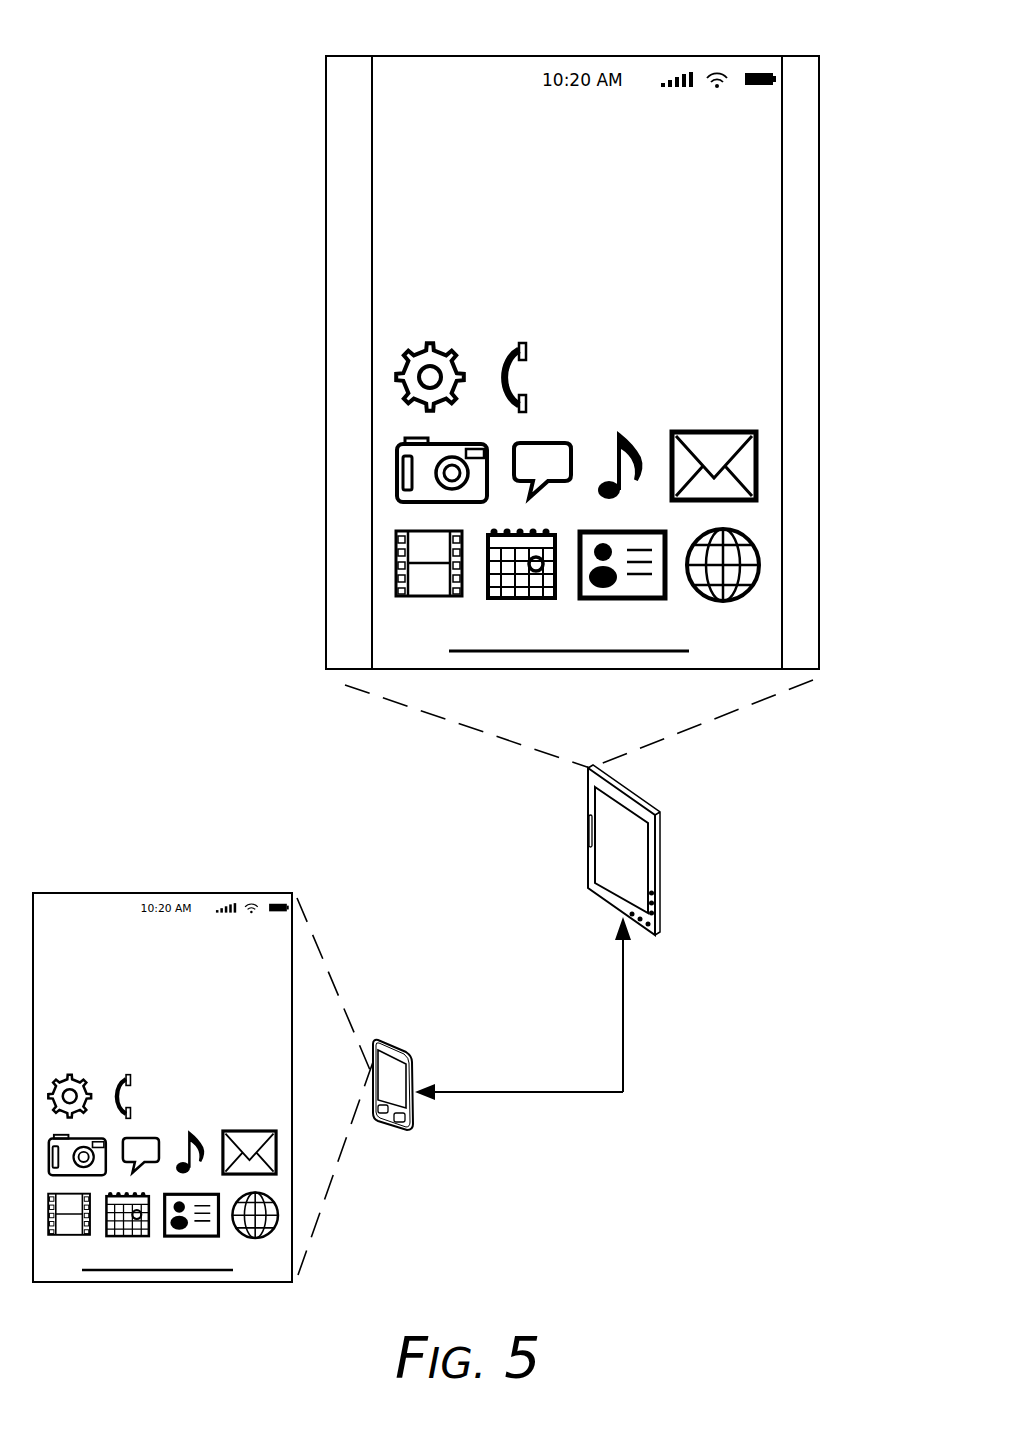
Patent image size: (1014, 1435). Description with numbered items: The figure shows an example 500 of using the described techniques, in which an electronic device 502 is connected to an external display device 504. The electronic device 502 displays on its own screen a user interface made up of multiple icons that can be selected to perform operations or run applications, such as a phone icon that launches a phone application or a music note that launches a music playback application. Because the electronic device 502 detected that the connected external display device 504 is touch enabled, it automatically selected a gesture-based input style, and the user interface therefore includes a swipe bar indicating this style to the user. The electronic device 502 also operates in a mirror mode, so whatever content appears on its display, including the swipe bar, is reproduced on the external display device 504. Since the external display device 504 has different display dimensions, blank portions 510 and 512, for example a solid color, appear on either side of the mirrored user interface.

The example 500 is at (153, 72).
The electronic device 502 is at (412, 1130).
The external display device 504 is at (662, 838).
The blank portion 510 is at (335, 233).
The blank portion 512 is at (801, 216).